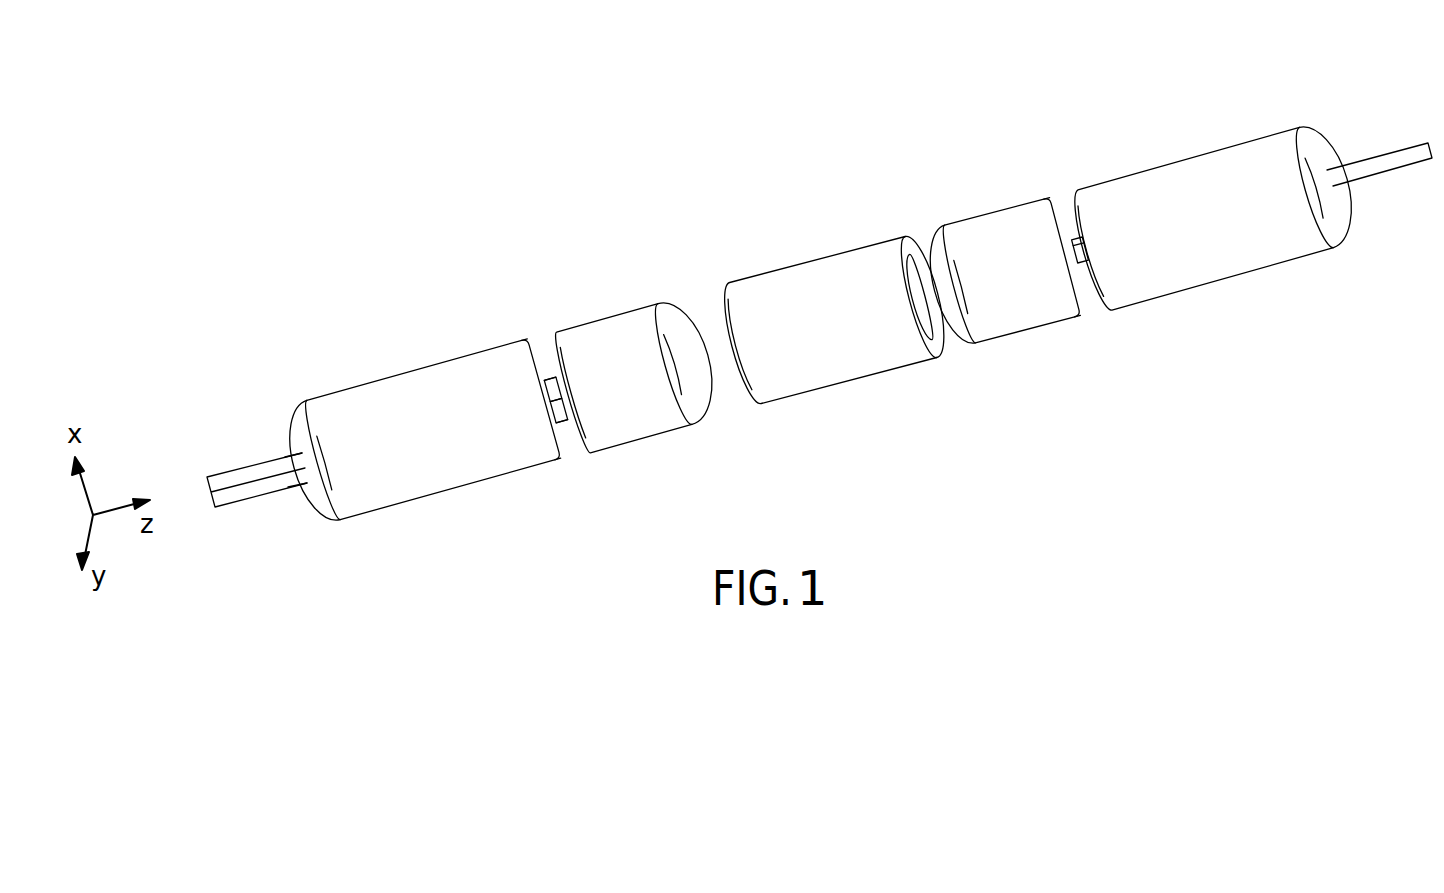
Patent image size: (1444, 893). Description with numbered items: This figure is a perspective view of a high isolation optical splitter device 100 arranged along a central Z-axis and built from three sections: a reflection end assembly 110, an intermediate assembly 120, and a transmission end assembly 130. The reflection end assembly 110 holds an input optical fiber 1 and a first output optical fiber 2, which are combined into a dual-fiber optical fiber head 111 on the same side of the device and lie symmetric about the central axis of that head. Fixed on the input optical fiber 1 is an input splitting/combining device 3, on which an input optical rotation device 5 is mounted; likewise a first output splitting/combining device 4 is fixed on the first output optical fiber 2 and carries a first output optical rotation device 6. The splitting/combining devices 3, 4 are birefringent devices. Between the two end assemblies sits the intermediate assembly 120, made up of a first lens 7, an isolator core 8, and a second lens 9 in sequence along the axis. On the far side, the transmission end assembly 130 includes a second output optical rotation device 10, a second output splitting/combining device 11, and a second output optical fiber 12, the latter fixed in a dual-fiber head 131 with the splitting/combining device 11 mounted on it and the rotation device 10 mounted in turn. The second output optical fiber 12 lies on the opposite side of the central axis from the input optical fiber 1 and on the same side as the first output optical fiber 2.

The high isolation optical splitter device 100 is at (328, 167).
The reflection end assembly 110 is at (362, 350).
The dual-fiber optical fiber head 111 is at (380, 515).
The input optical fiber 1 is at (245, 498).
The first output optical fiber 2 is at (272, 457).
The input splitting/combining device 3 is at (556, 423).
The first output splitting/combining device 4 is at (544, 380).
The input optical rotation device 5 is at (568, 420).
The first output optical rotation device 6 is at (556, 377).
The intermediate assembly 120 is at (760, 153).
The first lens 7 is at (682, 338).
The isolator core 8 is at (820, 287).
The transmission end assembly 130 is at (1158, 112).
The dual-fiber optical fiber head 131 is at (1207, 287).
The second lens 9 is at (1010, 230).
The second output optical rotation device 10 is at (1070, 239).
The second output splitting/combining device 11 is at (1082, 237).
The second output optical fiber 12 is at (1403, 152).